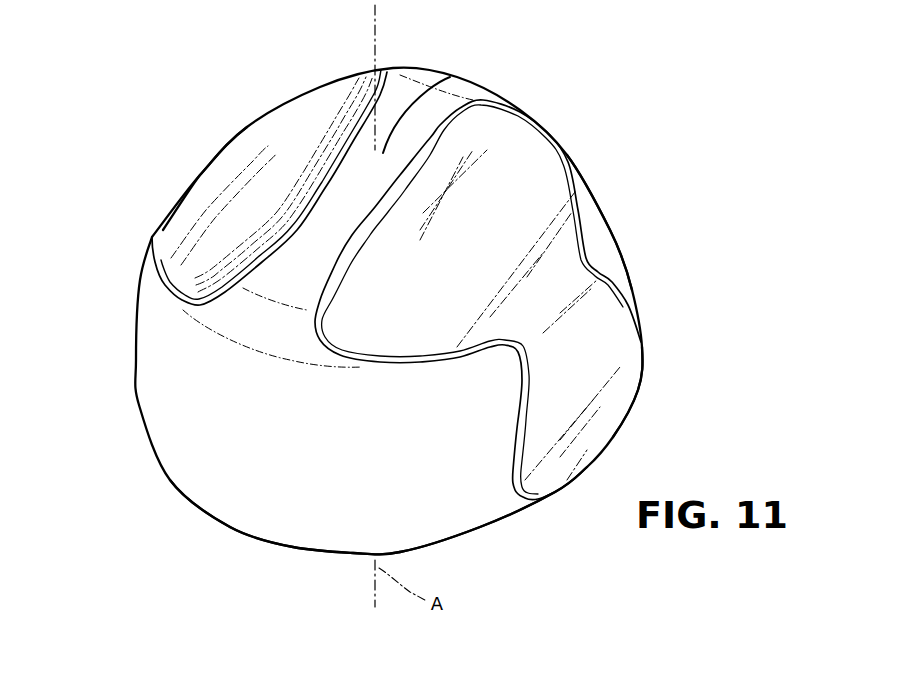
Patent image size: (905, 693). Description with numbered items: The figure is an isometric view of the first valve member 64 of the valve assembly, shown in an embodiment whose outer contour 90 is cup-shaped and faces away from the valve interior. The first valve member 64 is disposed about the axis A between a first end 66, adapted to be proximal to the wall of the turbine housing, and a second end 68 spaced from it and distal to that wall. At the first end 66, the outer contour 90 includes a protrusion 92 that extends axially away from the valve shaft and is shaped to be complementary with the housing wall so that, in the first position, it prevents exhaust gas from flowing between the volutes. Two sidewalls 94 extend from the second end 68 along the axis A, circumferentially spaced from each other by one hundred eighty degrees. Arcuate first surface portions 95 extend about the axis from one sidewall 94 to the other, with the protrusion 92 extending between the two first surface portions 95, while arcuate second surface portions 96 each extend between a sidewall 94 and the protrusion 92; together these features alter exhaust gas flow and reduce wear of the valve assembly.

The first valve member 64 is at (167, 377).
The first end 66 is at (290, 270).
The second end 68 is at (293, 547).
The outer contour 90 is at (458, 497).
The protrusion 92 is at (447, 78).
The sidewalls 94 is at (200, 173).
The first surface portions 95 is at (233, 450).
The second surface portions 96 is at (257, 153).